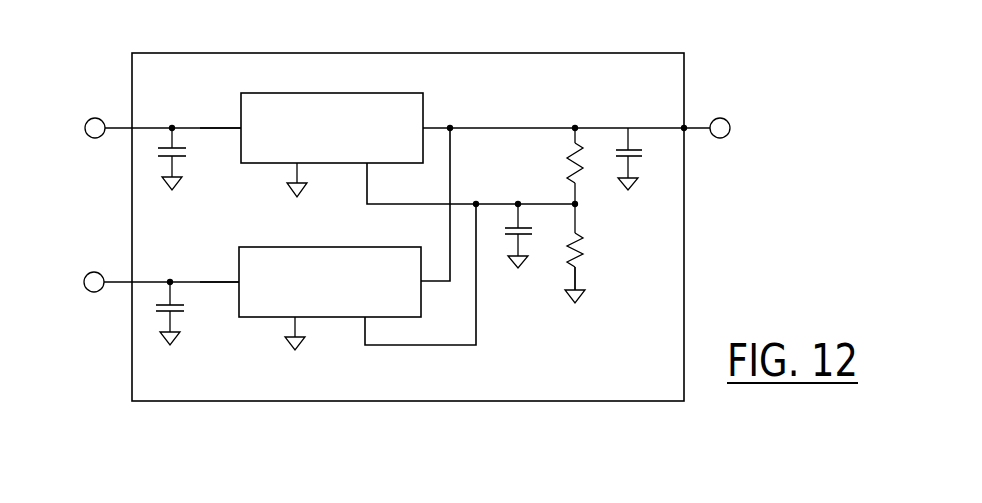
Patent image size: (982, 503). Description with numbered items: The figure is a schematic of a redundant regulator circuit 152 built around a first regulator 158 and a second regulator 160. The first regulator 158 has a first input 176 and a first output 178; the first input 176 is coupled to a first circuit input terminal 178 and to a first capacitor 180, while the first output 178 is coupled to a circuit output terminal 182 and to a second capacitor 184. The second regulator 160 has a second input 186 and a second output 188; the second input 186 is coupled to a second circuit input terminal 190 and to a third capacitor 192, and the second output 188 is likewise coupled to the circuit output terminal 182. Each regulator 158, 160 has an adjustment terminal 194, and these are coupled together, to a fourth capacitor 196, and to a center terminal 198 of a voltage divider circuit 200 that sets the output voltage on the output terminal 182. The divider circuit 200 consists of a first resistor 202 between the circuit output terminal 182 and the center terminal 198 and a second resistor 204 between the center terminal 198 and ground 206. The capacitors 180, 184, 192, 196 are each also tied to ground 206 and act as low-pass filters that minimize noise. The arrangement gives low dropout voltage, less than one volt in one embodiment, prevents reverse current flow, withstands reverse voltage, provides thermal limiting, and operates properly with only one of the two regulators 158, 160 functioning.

The regulator circuit 152 is at (614, 52).
The first regulator 158 is at (373, 93).
The second regulator 160 is at (357, 247).
The first input 176 is at (241, 127).
The first output / first circuit input terminal 178 is at (95, 118).
The first capacitor 180 is at (186, 143).
The circuit output terminal 182 is at (721, 118).
The second capacitor 184 is at (637, 148).
The second input 186 is at (239, 281).
The second output 188 is at (423, 284).
The second circuit input terminal 190 is at (94, 272).
The third capacitor 192 is at (184, 298).
The adjustment terminal 194 is at (368, 168).
The fourth capacitor 196 is at (538, 186).
The center terminal 198 is at (587, 205).
The voltage divider circuit 200 is at (560, 165).
The first resistor 202 is at (573, 163).
The second resistor 204 is at (583, 257).
The ground 206 is at (180, 190).